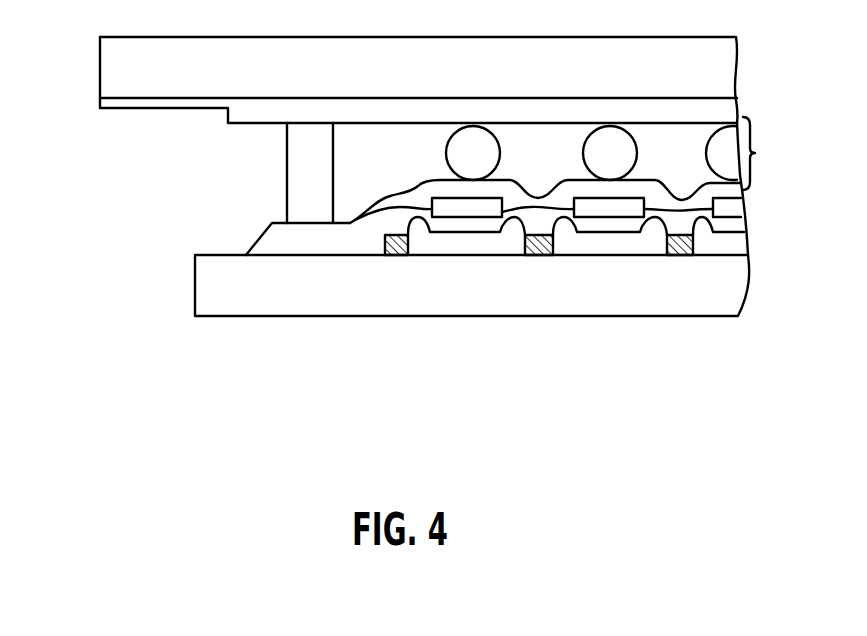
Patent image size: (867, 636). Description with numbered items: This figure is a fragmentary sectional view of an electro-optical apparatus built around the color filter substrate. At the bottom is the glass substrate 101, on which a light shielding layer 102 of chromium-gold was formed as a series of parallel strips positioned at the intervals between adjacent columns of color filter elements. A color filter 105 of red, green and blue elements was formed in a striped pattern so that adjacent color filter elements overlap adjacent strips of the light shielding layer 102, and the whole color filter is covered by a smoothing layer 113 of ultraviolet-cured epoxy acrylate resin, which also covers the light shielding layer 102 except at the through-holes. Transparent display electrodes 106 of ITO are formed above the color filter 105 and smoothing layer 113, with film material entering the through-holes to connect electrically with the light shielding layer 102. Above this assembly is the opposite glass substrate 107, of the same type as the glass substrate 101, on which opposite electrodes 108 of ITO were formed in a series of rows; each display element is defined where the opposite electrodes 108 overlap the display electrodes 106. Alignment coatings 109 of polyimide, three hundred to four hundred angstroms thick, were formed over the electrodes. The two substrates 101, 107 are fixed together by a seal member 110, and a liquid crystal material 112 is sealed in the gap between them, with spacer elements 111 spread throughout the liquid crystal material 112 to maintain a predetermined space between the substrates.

The glass substrate 101 is at (208, 277).
The light shielding layer 102 is at (537, 253).
The color filter 105 is at (478, 245).
The transparent display electrodes 106 is at (447, 210).
The opposite glass substrate 107 is at (112, 58).
The opposite electrodes 108 is at (110, 100).
The alignment coatings 109 is at (769, 153).
The seal member 110 is at (300, 172).
The spacer elements 111 is at (480, 147).
The liquid crystal material 112 is at (542, 135).
The smoothing layer 113 is at (328, 240).